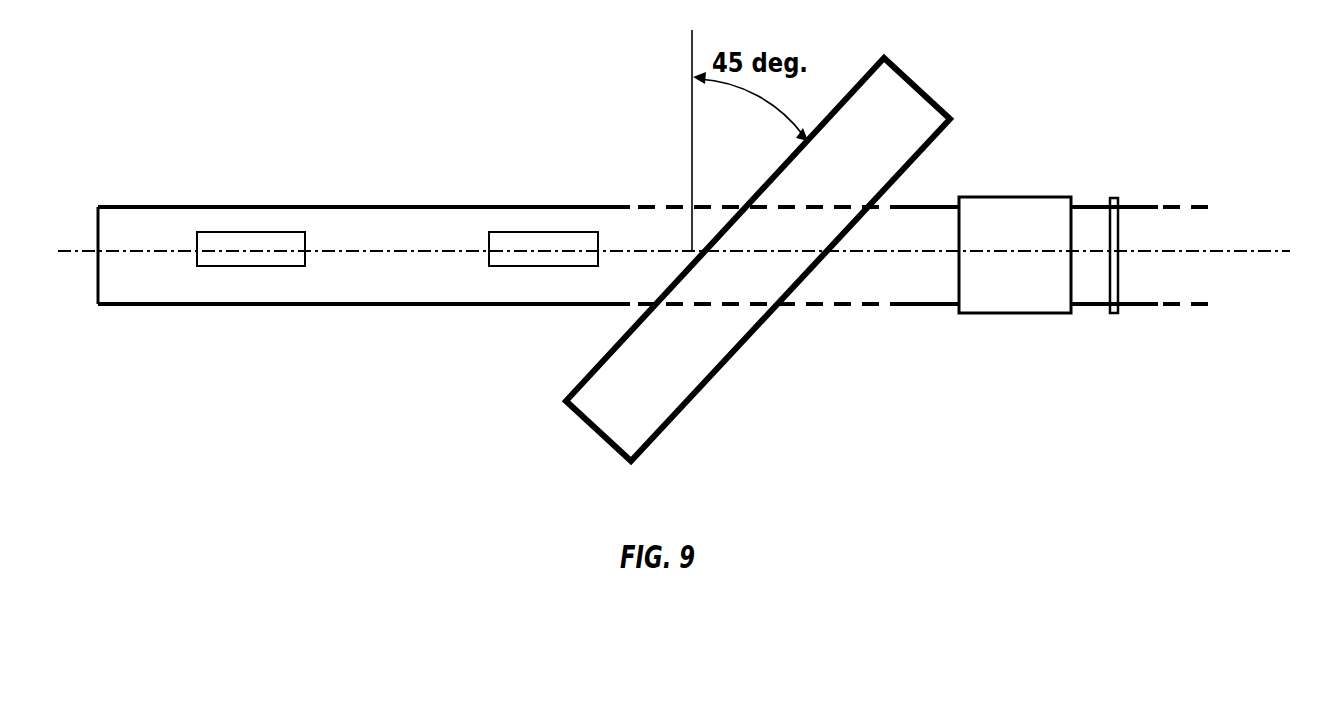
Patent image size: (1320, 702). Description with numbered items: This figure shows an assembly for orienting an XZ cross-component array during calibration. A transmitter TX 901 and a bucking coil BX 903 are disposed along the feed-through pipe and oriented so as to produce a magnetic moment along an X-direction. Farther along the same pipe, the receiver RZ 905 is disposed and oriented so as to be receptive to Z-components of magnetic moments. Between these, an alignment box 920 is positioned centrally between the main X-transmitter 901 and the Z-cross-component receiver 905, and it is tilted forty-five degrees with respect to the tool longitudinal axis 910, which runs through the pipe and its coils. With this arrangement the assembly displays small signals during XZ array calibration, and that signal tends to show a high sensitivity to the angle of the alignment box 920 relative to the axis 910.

The transmitter TX 901 is at (248, 262).
The bucking coil BX 903 is at (525, 262).
The tool longitudinal axis 910 is at (370, 277).
The receiver RZ 905 is at (1010, 197).
The alignment box 920 is at (717, 375).